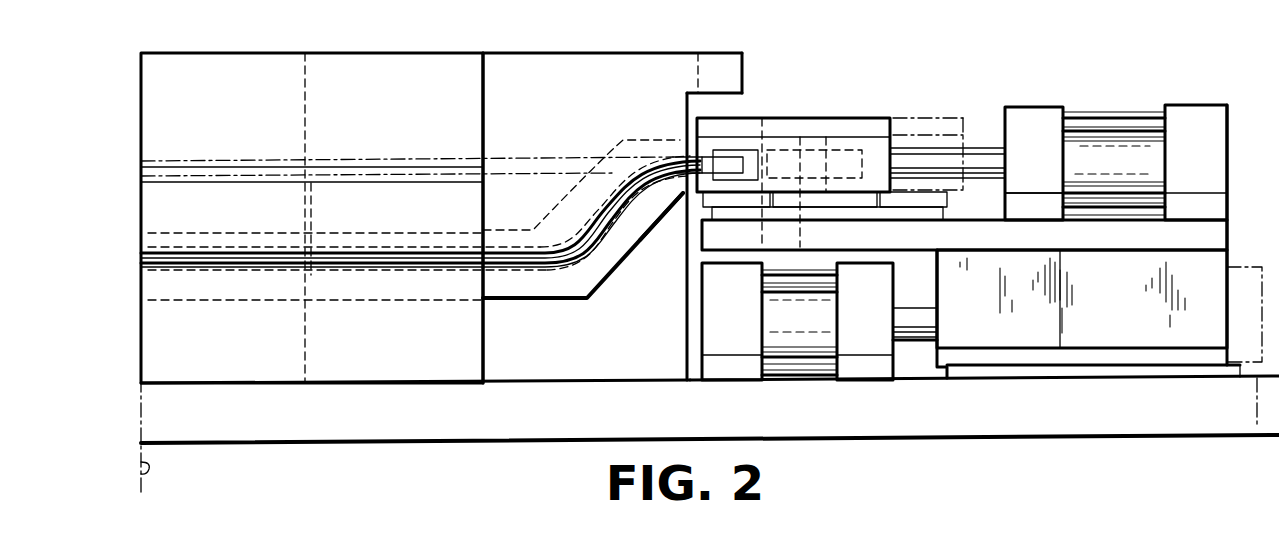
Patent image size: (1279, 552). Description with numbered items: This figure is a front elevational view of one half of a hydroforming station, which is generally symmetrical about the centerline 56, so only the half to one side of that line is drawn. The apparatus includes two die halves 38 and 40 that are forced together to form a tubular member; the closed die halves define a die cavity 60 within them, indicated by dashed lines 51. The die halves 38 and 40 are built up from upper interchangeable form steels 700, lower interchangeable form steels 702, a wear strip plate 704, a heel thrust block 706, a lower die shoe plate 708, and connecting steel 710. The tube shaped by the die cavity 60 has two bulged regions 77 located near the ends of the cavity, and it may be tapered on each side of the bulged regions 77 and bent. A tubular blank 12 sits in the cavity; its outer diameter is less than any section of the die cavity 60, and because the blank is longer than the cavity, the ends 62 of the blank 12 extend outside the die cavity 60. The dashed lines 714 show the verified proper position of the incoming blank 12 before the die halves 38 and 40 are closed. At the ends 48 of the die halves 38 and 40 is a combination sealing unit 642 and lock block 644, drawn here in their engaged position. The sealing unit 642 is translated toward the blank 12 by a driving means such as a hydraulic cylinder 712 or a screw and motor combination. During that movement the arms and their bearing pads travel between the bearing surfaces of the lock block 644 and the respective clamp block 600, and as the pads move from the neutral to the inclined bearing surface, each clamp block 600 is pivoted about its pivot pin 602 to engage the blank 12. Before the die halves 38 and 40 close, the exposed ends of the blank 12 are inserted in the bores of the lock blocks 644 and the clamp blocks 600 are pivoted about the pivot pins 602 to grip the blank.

The tubular blank 12 is at (388, 270).
The die half 38 is at (514, 82).
The die half 40 is at (590, 342).
The ends of the die halves 48 is at (750, 124).
The dashed lines 51 is at (527, 270).
The centerline 56 is at (141, 470).
The die cavity 60 is at (602, 260).
The ends of the blank 62 is at (662, 183).
The bulged regions 77 is at (612, 177).
The clamp block 600 is at (851, 110).
The pivot pin 602 is at (964, 190).
The sealing unit 642 is at (1030, 227).
The lock block 644 is at (748, 147).
The upper interchangeable form steels 700 is at (307, 80).
The lower interchangeable form steels 702 is at (493, 385).
The wear strip plate 704 is at (221, 3).
The heel thrust block 706 is at (361, 0).
The lower die shoe plate 708 is at (814, 438).
The connecting steel 710 is at (488, 115).
The hydraulic cylinder 712 is at (1047, 120).
The dashed lines 714 is at (610, 152).